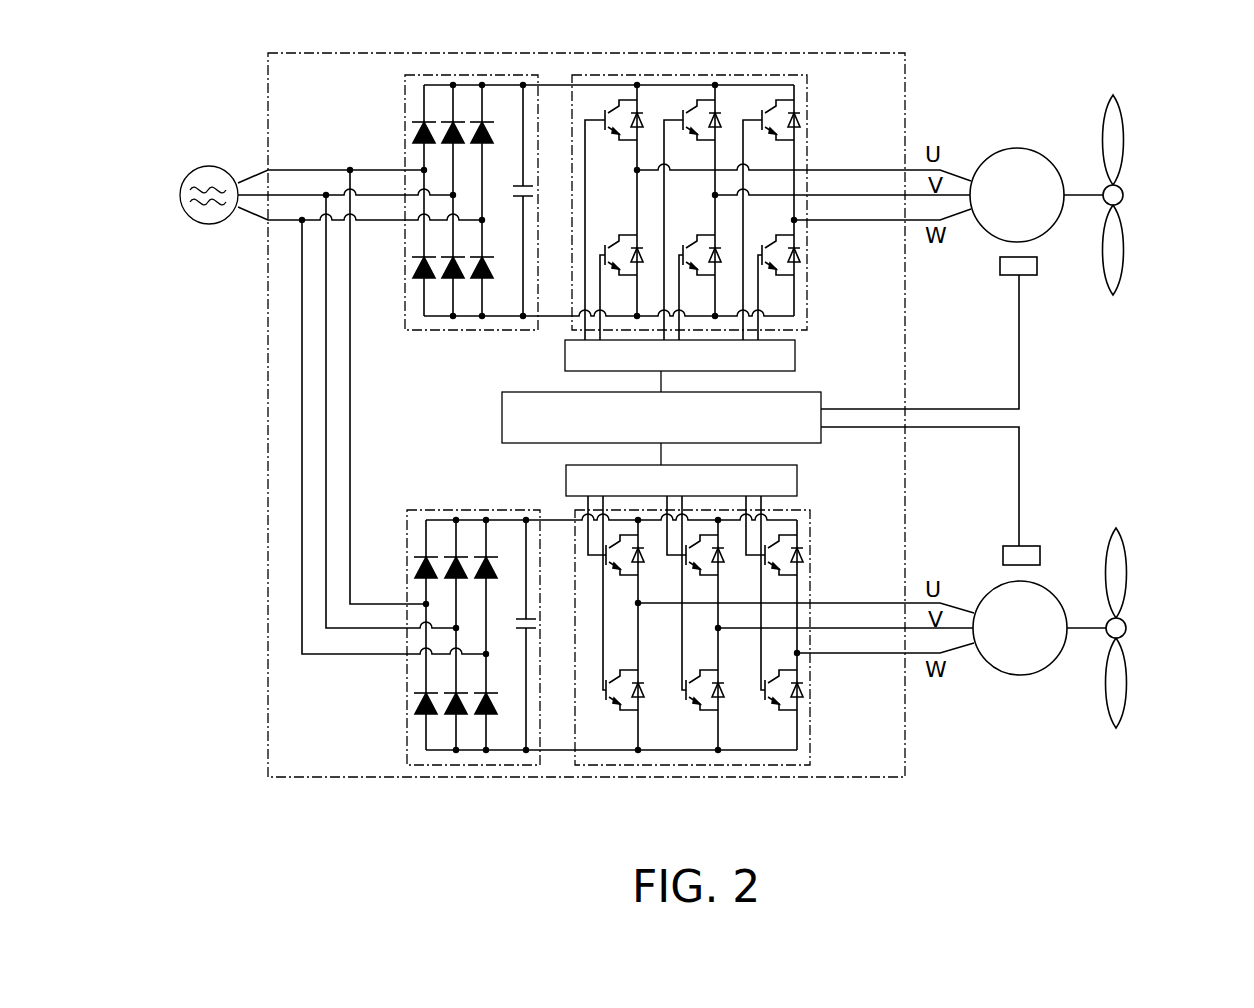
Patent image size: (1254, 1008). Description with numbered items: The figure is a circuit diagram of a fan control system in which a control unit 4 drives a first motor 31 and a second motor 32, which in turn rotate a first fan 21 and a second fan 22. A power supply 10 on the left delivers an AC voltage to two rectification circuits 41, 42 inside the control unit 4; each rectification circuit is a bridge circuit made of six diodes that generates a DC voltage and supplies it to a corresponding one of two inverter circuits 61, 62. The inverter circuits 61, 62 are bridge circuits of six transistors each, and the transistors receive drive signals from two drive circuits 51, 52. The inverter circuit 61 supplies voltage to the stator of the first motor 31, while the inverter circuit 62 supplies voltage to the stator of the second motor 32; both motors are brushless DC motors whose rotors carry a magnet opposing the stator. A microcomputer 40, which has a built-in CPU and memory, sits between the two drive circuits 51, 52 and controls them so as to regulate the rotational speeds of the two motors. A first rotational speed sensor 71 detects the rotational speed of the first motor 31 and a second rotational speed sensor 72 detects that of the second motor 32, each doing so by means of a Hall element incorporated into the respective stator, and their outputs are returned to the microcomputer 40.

The control unit 4 is at (268, 350).
The power supply 10 is at (200, 168).
The first fan 21 is at (1113, 128).
The second fan 22 is at (1117, 703).
The first motor 31 is at (1000, 162).
The second motor 32 is at (1023, 667).
The microcomputer 40 is at (502, 418).
The rectification circuit 41 is at (405, 100).
The rectification circuit 42 is at (407, 735).
The drive circuit 51 is at (783, 355).
The drive circuit 52 is at (797, 487).
The inverter circuit 61 is at (810, 128).
The inverter circuit 62 is at (812, 700).
The first rotational speed sensor 71 is at (1027, 268).
The second rotational speed sensor 72 is at (1032, 555).